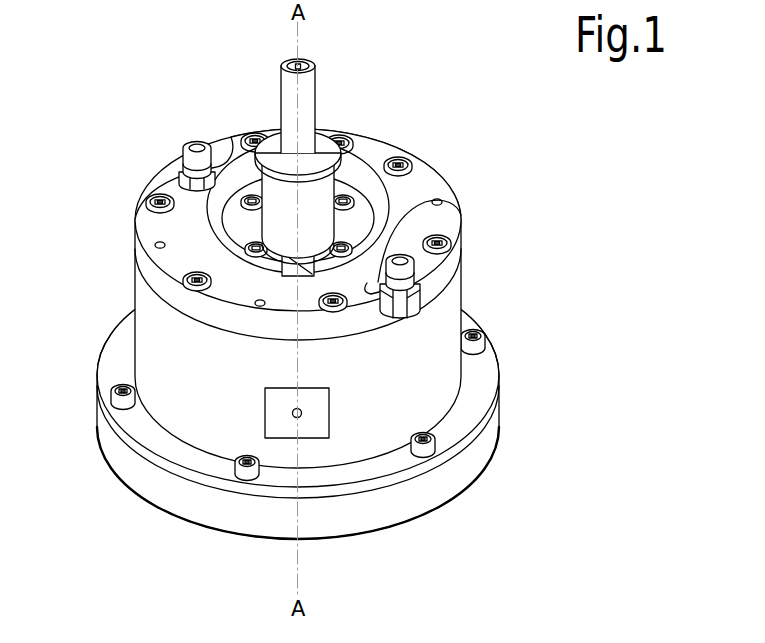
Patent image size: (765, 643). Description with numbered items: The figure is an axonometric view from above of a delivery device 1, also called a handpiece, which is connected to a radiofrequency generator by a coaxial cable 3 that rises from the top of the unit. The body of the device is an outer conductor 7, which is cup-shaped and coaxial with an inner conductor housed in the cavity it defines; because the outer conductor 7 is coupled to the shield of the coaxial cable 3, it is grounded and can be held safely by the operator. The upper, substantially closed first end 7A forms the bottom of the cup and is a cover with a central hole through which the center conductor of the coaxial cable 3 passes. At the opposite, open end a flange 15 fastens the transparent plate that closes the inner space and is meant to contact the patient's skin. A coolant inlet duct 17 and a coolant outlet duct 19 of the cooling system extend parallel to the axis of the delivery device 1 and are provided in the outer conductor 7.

The delivery device 1 is at (279, 316).
The coaxial cable 3 is at (307, 115).
The outer conductor 7 is at (166, 331).
The first end 7A is at (423, 188).
The flange 15 is at (382, 508).
The coolant inlet duct 17 is at (192, 169).
The coolant outlet duct 19 is at (402, 262).